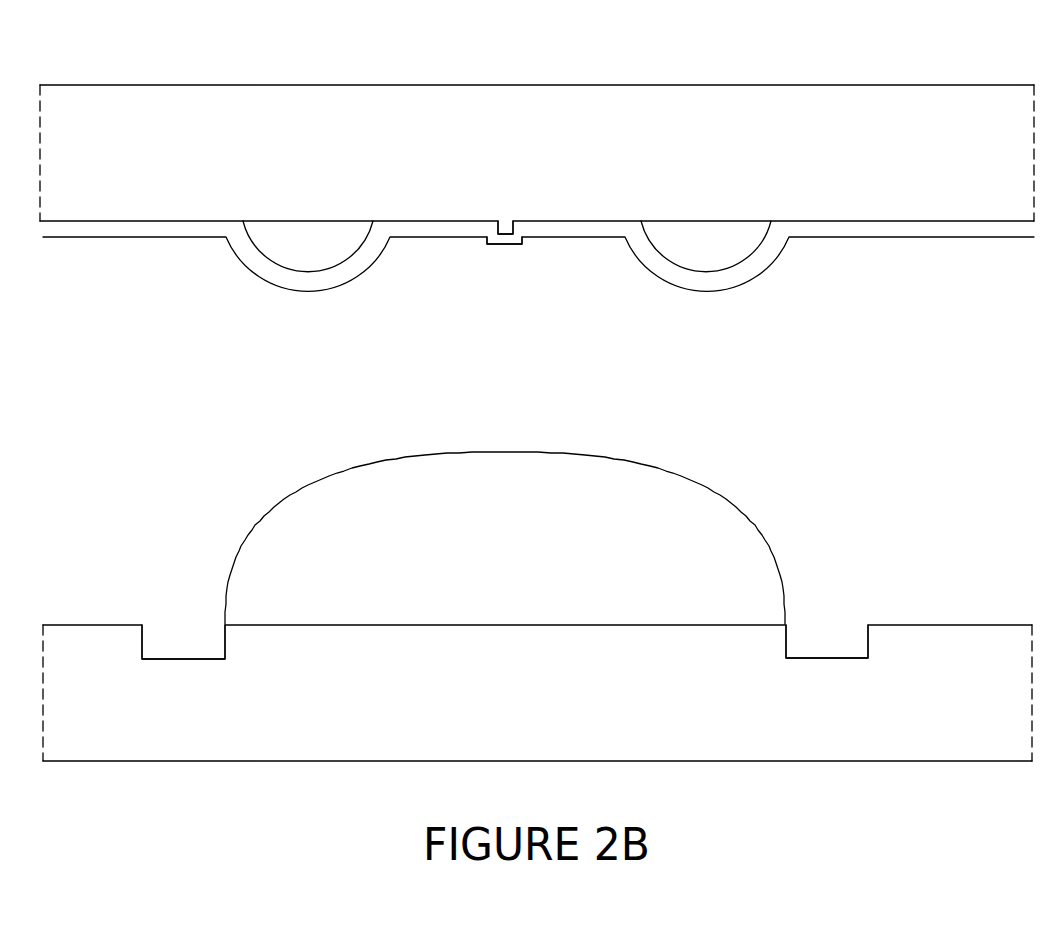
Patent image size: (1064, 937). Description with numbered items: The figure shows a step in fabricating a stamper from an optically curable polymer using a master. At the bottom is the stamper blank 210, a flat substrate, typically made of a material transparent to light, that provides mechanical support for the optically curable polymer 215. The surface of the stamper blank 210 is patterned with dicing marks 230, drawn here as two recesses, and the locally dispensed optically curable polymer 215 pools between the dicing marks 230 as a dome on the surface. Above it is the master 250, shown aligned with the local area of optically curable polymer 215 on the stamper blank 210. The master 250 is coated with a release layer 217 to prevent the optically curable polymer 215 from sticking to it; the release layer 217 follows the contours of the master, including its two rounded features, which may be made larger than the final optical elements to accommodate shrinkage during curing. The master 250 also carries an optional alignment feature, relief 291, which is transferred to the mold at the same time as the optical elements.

The master 250 is at (534, 102).
The release layer 217 is at (928, 228).
The relief 291 is at (492, 231).
The stamper blank 210 is at (988, 634).
The dicing marks 230 is at (186, 622).
The optically curable polymer 215 is at (657, 498).